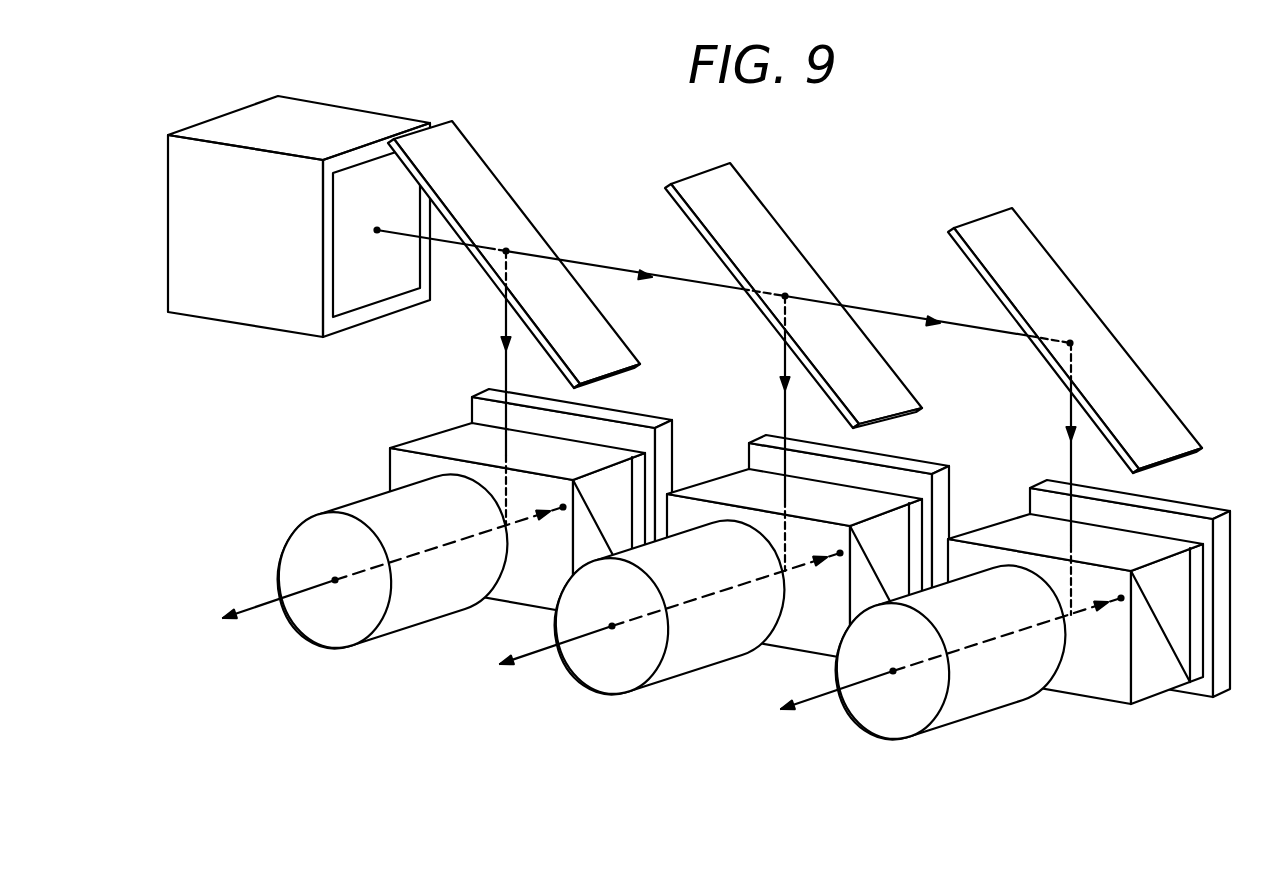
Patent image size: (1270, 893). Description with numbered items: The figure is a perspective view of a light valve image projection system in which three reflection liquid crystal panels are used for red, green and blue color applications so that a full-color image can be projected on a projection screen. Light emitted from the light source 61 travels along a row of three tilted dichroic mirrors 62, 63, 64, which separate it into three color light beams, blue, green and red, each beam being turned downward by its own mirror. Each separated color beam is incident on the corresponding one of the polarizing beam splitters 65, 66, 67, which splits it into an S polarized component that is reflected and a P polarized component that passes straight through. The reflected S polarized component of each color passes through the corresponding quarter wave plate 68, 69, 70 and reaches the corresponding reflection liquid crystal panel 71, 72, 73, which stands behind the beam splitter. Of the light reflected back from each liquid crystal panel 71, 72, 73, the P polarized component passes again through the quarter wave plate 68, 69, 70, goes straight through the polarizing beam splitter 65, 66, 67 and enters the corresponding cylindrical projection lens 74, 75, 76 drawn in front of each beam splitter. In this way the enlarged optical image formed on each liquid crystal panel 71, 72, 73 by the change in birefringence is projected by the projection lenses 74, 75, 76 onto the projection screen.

The light source 61 is at (213, 305).
The dichroic mirror 62 is at (463, 145).
The dichroic mirror 63 is at (735, 185).
The dichroic mirror 64 is at (1018, 225).
The polarizing beam splitter 65 is at (390, 474).
The polarizing beam splitter 66 is at (794, 539).
The polarizing beam splitter 67 is at (1075, 582).
The quarter wave plate 68 is at (462, 423).
The quarter wave plate 69 is at (794, 523).
The quarter wave plate 70 is at (1075, 558).
The reflection liquid crystal panel 71 is at (640, 407).
The reflection liquid crystal panel 72 is at (849, 517).
The reflection liquid crystal panel 73 is at (1133, 560).
The projection lens 74 is at (330, 643).
The projection lens 75 is at (666, 641).
The projection lens 76 is at (947, 685).